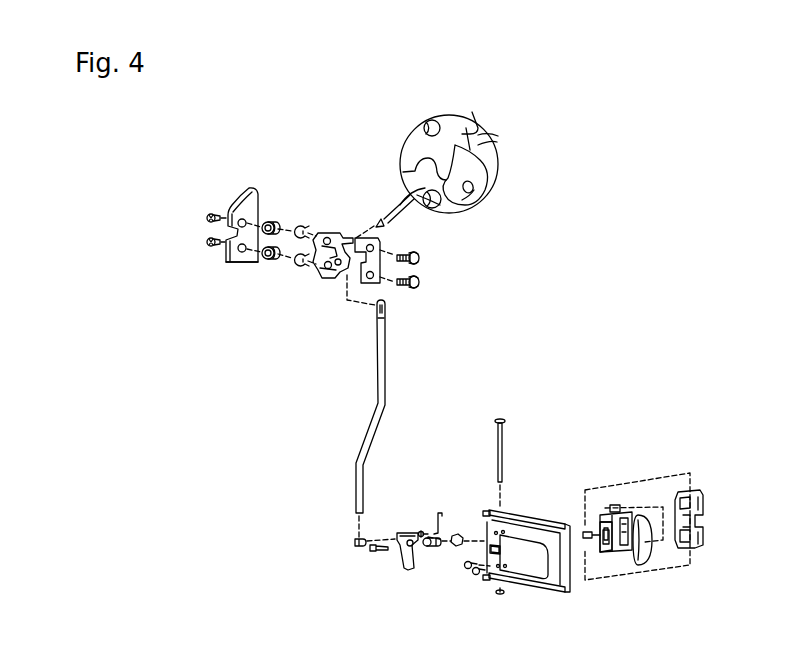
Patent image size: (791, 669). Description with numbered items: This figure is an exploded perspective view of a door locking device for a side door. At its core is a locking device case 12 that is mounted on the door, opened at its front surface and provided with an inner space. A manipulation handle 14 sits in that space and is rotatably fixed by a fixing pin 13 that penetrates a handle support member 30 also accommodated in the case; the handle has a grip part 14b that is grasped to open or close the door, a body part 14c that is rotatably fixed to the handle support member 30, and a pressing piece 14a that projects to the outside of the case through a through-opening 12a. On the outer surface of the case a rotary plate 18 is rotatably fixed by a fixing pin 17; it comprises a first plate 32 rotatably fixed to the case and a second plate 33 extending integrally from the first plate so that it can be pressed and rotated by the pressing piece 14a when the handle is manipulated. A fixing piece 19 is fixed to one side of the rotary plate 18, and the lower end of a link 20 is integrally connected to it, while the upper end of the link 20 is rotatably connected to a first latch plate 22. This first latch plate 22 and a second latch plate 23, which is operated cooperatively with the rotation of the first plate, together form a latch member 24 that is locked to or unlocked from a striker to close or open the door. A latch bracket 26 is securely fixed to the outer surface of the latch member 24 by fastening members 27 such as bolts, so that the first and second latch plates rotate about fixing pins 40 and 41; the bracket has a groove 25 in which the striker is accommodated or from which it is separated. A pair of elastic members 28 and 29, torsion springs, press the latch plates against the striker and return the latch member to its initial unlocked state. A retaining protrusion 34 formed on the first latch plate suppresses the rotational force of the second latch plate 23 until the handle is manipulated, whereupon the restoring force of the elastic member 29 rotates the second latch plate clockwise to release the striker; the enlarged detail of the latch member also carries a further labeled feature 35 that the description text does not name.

The locking device case 12 is at (534, 503).
The through-opening 12a is at (505, 548).
The fixing pin 13 is at (508, 430).
The manipulation handle 14 is at (620, 520).
The pressing piece 14a is at (598, 545).
The grip part 14b is at (650, 560).
The body part 14c is at (616, 550).
The fixing pin 17 is at (433, 548).
The rotary plate 18 is at (402, 566).
The fixing piece 19 is at (355, 545).
The link 20 is at (370, 394).
The first latch plate 22 is at (323, 280).
The second latch plate 23 is at (356, 236).
The latch member 24 is at (478, 150).
The groove 25 is at (219, 249).
The latch bracket 26 is at (253, 206).
The fastening members 27 is at (457, 288).
The elastic member 28 is at (300, 267).
The elastic member 29 is at (305, 226).
The handle support member 30 is at (676, 484).
The first plate 32 is at (407, 532).
The second plate 33 is at (416, 570).
The retaining protrusion 34 is at (497, 150).
The latch pin 35 is at (467, 203).
The fixing pin 40 is at (266, 258).
The fixing pin 41 is at (273, 222).